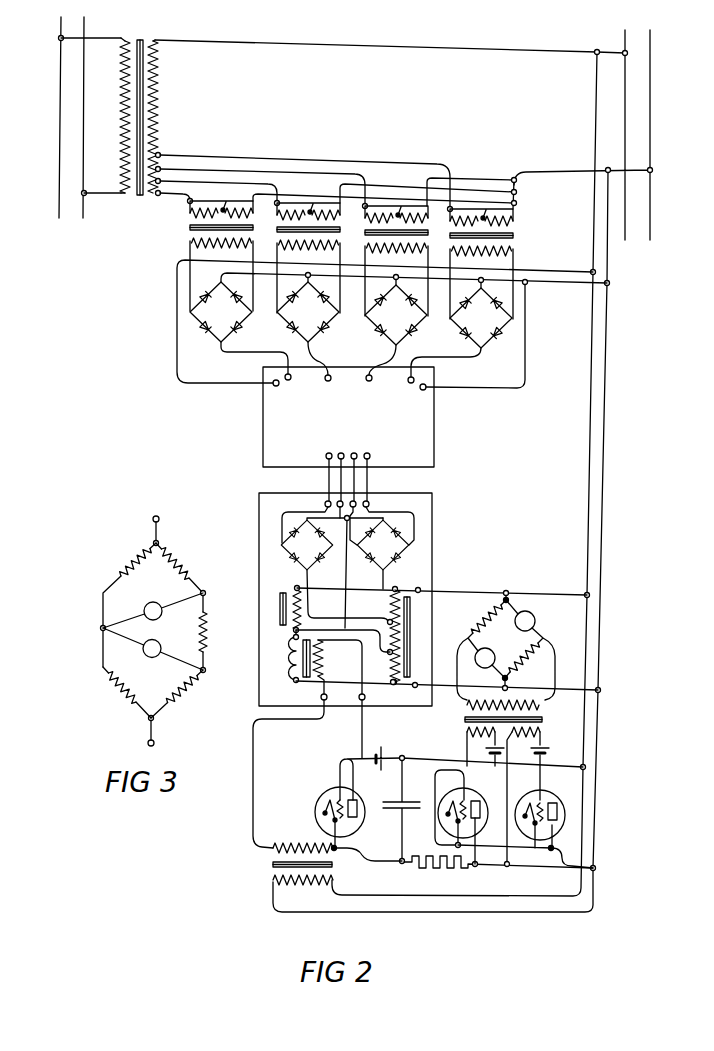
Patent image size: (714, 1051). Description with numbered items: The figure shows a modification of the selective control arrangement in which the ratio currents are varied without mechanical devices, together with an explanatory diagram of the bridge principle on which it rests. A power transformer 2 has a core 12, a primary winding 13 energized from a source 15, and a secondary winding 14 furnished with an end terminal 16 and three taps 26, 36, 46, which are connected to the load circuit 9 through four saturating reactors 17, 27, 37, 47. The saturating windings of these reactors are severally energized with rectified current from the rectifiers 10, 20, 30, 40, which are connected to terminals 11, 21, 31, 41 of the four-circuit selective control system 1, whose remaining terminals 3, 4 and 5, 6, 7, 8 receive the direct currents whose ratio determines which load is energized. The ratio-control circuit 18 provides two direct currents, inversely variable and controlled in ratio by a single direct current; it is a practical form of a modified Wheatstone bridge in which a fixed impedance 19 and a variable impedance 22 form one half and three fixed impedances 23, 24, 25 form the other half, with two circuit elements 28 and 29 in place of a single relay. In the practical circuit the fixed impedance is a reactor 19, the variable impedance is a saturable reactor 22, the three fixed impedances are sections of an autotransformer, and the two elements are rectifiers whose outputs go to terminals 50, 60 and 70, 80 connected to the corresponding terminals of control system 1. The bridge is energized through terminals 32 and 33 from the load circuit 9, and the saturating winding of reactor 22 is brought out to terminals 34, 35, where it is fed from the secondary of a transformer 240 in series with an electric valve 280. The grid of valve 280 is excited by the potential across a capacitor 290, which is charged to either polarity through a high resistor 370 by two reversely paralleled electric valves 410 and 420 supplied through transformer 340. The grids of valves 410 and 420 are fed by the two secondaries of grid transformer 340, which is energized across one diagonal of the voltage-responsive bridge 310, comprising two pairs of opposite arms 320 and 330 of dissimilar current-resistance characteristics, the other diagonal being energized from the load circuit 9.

In FIG. 2, the selective control system 1 is at (457, 421).
In FIG. 2, the power transformer 2 is at (146, 35).
In FIG. 2, the terminal 3 is at (385, 334).
In FIG. 2, the terminal 4 is at (472, 345).
In FIG. 2, the terminal 5 is at (327, 453).
In FIG. 2, the terminal 6 is at (341, 453).
In FIG. 2, the terminal 7 is at (354, 453).
In FIG. 2, the terminal 8 is at (368, 453).
In FIG. 2, the load circuit 9 is at (468, 471).
In FIG. 2, the rectifier 10 is at (398, 323).
In FIG. 2, the terminal 11 is at (292, 386).
In FIG. 2, the core 12 is at (141, 128).
In FIG. 2, the primary winding 13 is at (117, 115).
In FIG. 2, the secondary winding 14 is at (164, 116).
In FIG. 2, the source 15 is at (60, 116).
In FIG. 2, the end terminal 16 is at (160, 191).
In FIG. 2, the saturating reactor 17 is at (351, 252).
In FIG. 2, the ratio-control circuit 18 is at (455, 514).
In FIG. 2, the fixed impedance 19 is at (284, 603).
In FIG. 3, the fixed impedance 19 is at (129, 605).
In FIG. 2, the rectifier 20 is at (308, 324).
In FIG. 2, the terminal 21 is at (324, 387).
In FIG. 2, the saturable reactor 22 is at (314, 662).
In FIG. 3, the saturable reactor 22 is at (124, 692).
In FIG. 2, the autotransformer section 23 is at (385, 637).
In FIG. 3, the autotransformer section 23 is at (183, 577).
In FIG. 2, the autotransformer section 24 is at (375, 630).
In FIG. 3, the autotransformer section 24 is at (213, 642).
In FIG. 2, the autotransformer section 25 is at (344, 650).
In FIG. 3, the autotransformer section 25 is at (177, 694).
In FIG. 2, the tap 26 is at (160, 179).
In FIG. 2, the saturating reactor 27 is at (395, 248).
In FIG. 2, the rectifier 28 is at (382, 553).
In FIG. 3, the rectifier 28 is at (153, 607).
In FIG. 2, the rectifier 29 is at (334, 572).
In FIG. 3, the rectifier 29 is at (153, 653).
In FIG. 2, the rectifier 30 is at (396, 325).
In FIG. 2, the terminal 31 is at (365, 387).
In FIG. 2, the terminal 32 is at (442, 582).
In FIG. 2, the terminal 33 is at (447, 678).
In FIG. 2, the terminal 34 is at (290, 768).
In FIG. 2, the terminal 35 is at (351, 723).
In FIG. 2, the tap 36 is at (160, 167).
In FIG. 2, the saturating reactor 37 is at (439, 247).
In FIG. 2, the rectifier 40 is at (461, 328).
In FIG. 2, the terminal 41 is at (402, 389).
In FIG. 2, the tap 46 is at (160, 153).
In FIG. 2, the saturating reactor 47 is at (492, 249).
In FIG. 2, the terminal 50 is at (325, 502).
In FIG. 2, the terminal 60 is at (337, 502).
In FIG. 2, the terminal 70 is at (356, 502).
In FIG. 2, the terminal 80 is at (369, 502).
In FIG. 2, the transformer 240 is at (337, 857).
In FIG. 2, the electric valve 280 is at (352, 797).
In FIG. 2, the capacitor 290 is at (473, 810).
In FIG. 2, the balanced bridge circuit 310 is at (518, 650).
In FIG. 2, the bridge arms 320 is at (499, 646).
In FIG. 2, the bridge arms 330 is at (511, 645).
In FIG. 2, the grid transformer 340 is at (518, 780).
In FIG. 2, the high resistor 370 is at (498, 874).
In FIG. 2, the electric valve 410 is at (470, 817).
In FIG. 2, the electric valve 420 is at (525, 823).